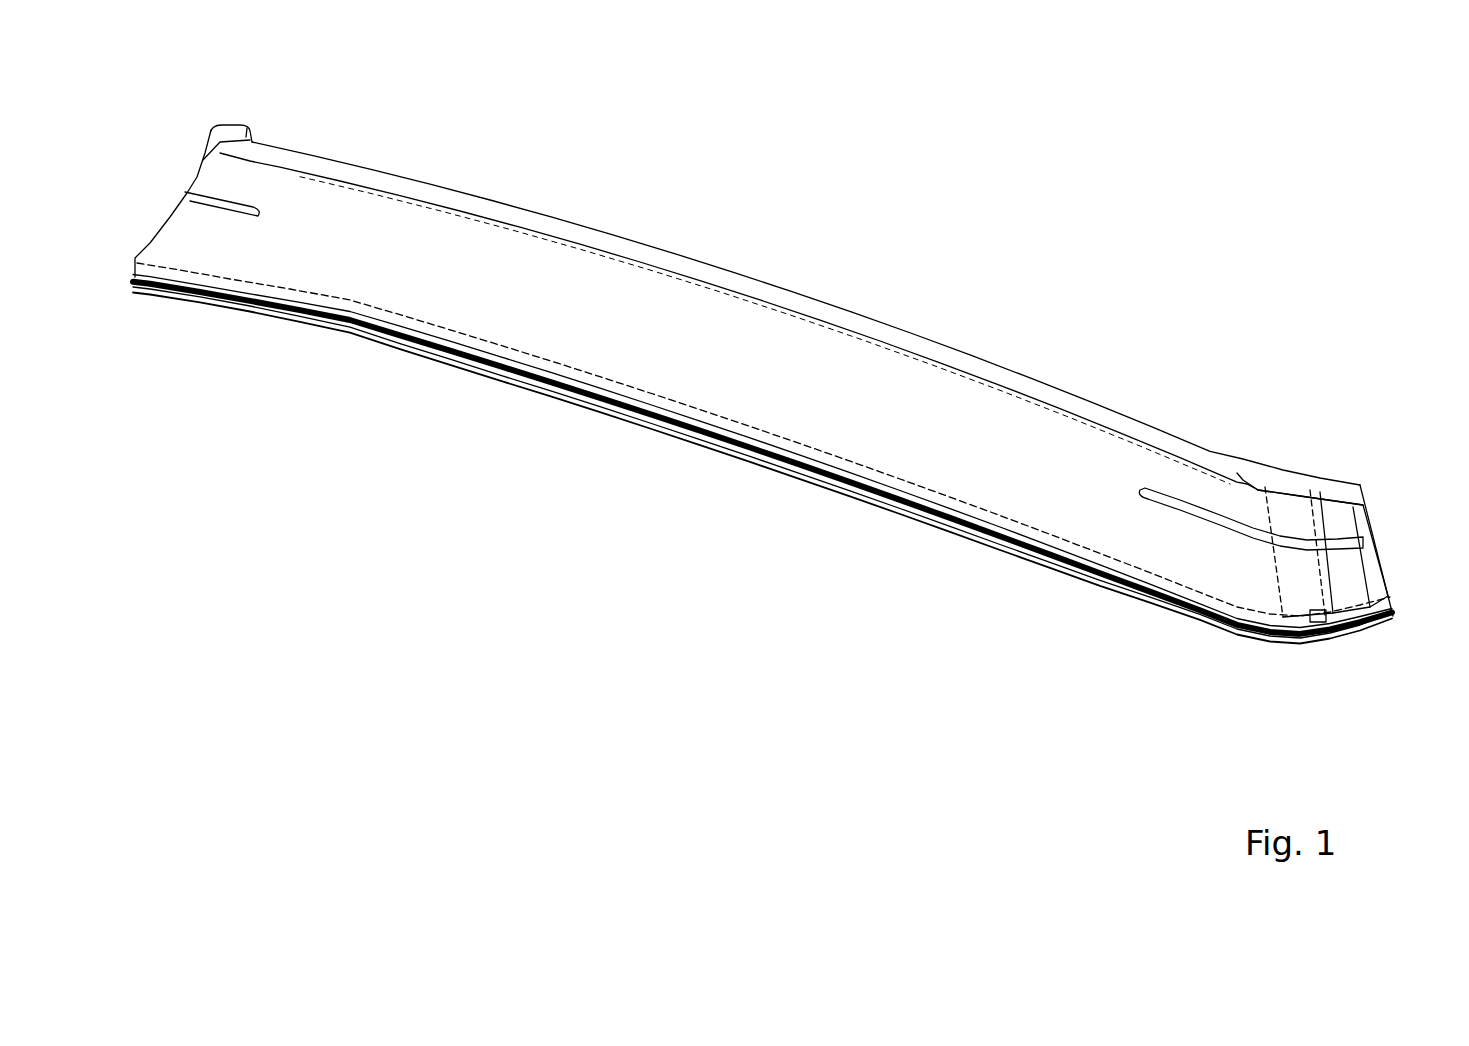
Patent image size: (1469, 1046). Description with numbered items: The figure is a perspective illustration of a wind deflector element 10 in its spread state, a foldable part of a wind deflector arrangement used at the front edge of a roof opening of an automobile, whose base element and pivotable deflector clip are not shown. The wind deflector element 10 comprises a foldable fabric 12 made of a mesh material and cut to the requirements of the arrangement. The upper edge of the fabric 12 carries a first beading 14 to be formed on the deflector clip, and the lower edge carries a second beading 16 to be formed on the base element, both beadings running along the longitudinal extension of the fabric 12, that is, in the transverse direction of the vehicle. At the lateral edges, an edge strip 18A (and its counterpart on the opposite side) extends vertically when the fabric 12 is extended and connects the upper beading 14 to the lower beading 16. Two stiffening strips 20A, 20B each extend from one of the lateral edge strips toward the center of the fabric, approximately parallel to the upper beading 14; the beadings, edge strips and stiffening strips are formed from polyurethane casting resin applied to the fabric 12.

The wind deflector element 10 is at (787, 347).
The fabric 12 is at (708, 364).
The first beading 14 is at (689, 263).
The second beading 16 is at (689, 418).
The edge strip 18A is at (1362, 527).
The stiffening strip 20A is at (1177, 512).
The stiffening strip 20B is at (236, 211).